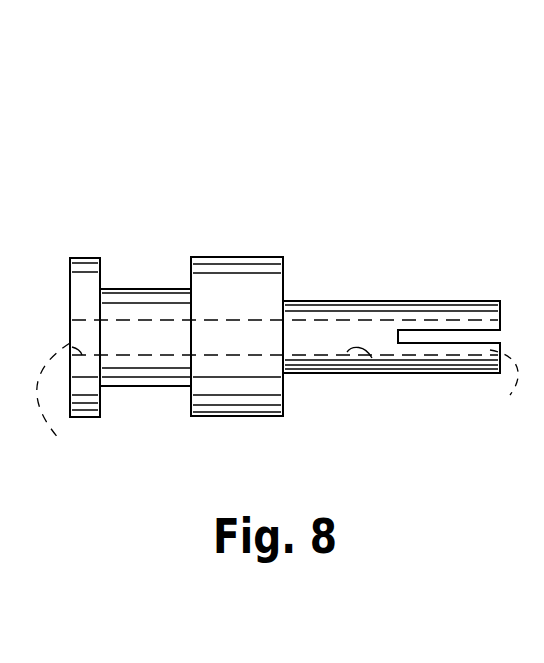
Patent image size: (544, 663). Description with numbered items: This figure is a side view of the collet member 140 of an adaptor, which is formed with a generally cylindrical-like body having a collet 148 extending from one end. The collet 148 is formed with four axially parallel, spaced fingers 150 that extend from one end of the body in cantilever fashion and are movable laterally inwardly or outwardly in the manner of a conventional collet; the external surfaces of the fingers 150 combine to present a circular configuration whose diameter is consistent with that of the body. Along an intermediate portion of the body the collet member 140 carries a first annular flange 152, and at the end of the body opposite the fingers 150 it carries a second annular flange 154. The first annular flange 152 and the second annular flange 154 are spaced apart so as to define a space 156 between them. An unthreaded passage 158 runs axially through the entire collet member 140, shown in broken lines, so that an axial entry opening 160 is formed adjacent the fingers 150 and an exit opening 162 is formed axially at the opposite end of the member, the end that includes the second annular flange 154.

The collet member 140 is at (368, 141).
The collet 148 is at (431, 300).
The fingers 150 is at (486, 312).
The first annular flange 152 is at (226, 278).
The second annular flange 154 is at (88, 270).
The space 156 is at (100, 277).
The unthreaded passage 158 is at (372, 358).
The axial entry opening 160 is at (510, 395).
The exit opening 162 is at (62, 410).